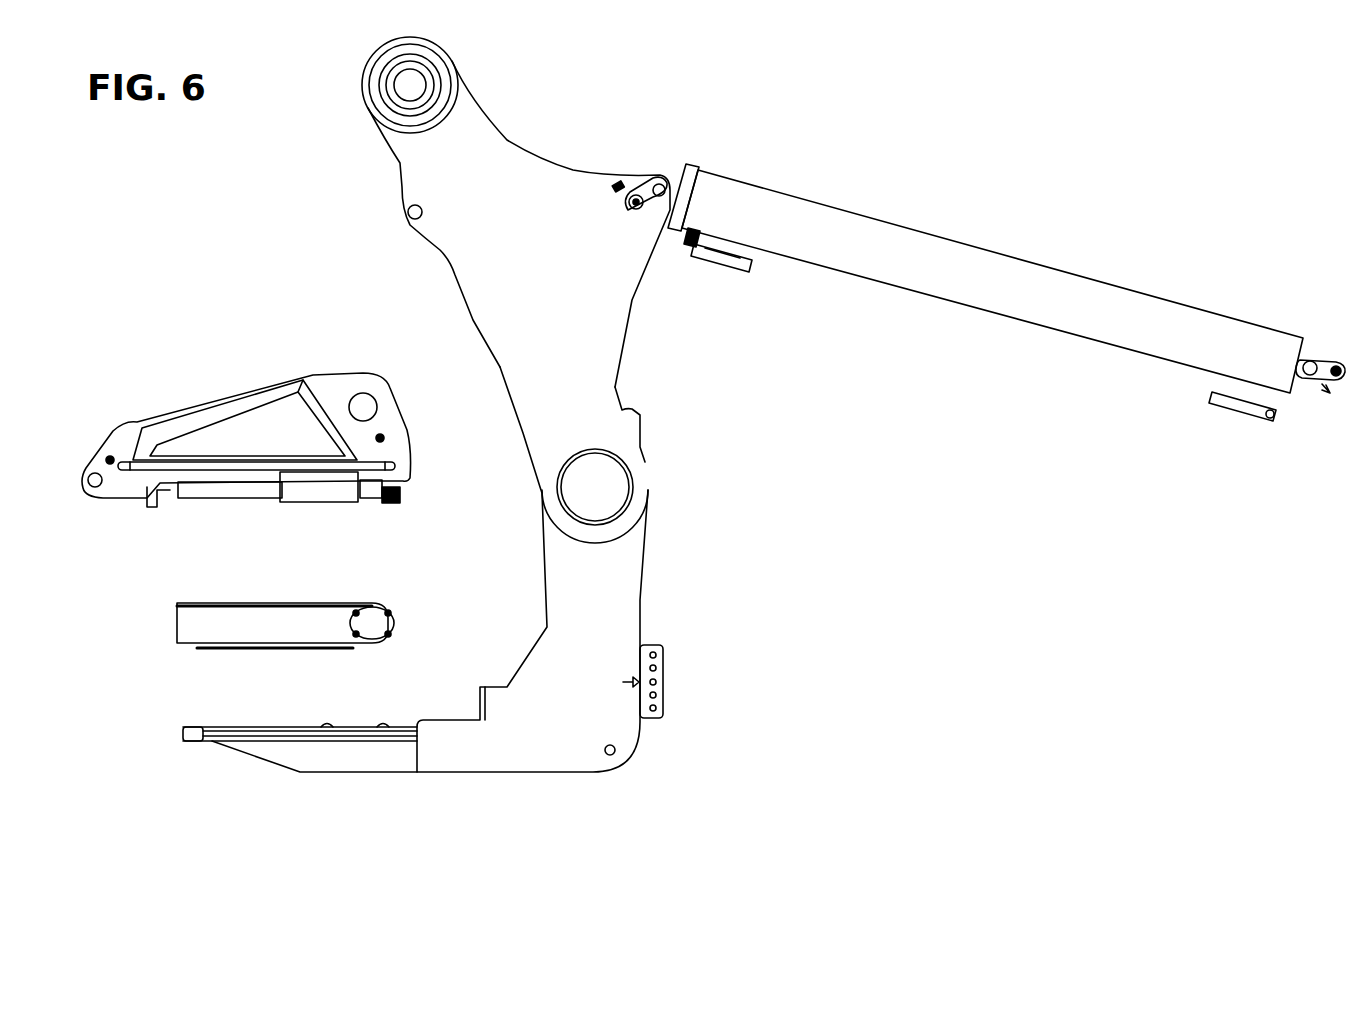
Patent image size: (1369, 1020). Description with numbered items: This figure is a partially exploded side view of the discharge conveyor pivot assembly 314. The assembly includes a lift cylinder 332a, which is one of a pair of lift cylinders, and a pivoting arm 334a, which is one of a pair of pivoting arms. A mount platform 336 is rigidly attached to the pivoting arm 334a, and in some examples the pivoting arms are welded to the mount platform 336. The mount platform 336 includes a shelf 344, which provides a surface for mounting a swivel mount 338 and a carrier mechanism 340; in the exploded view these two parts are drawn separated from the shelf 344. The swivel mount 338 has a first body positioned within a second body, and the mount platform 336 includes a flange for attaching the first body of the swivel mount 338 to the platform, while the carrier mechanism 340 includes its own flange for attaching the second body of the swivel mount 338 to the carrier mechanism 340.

The discharge conveyor pivot assembly 314 is at (1097, 133).
The lift cylinder 332a is at (993, 288).
The pivoting arm 334a is at (607, 307).
The mount platform 336 is at (617, 597).
The swivel mount 338 is at (188, 627).
The carrier mechanism 340 is at (122, 490).
The shelf 344 is at (232, 728).